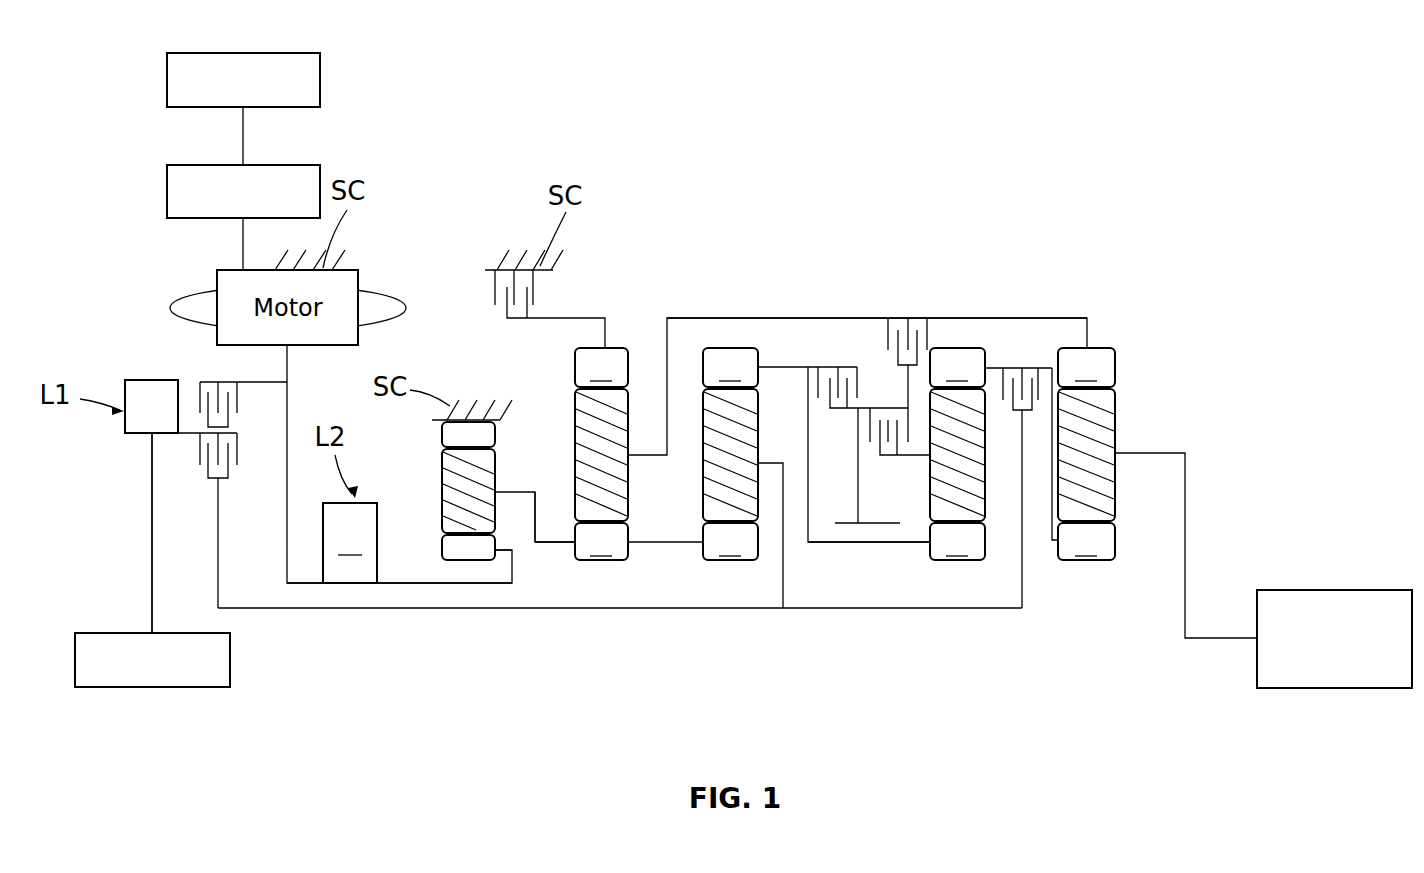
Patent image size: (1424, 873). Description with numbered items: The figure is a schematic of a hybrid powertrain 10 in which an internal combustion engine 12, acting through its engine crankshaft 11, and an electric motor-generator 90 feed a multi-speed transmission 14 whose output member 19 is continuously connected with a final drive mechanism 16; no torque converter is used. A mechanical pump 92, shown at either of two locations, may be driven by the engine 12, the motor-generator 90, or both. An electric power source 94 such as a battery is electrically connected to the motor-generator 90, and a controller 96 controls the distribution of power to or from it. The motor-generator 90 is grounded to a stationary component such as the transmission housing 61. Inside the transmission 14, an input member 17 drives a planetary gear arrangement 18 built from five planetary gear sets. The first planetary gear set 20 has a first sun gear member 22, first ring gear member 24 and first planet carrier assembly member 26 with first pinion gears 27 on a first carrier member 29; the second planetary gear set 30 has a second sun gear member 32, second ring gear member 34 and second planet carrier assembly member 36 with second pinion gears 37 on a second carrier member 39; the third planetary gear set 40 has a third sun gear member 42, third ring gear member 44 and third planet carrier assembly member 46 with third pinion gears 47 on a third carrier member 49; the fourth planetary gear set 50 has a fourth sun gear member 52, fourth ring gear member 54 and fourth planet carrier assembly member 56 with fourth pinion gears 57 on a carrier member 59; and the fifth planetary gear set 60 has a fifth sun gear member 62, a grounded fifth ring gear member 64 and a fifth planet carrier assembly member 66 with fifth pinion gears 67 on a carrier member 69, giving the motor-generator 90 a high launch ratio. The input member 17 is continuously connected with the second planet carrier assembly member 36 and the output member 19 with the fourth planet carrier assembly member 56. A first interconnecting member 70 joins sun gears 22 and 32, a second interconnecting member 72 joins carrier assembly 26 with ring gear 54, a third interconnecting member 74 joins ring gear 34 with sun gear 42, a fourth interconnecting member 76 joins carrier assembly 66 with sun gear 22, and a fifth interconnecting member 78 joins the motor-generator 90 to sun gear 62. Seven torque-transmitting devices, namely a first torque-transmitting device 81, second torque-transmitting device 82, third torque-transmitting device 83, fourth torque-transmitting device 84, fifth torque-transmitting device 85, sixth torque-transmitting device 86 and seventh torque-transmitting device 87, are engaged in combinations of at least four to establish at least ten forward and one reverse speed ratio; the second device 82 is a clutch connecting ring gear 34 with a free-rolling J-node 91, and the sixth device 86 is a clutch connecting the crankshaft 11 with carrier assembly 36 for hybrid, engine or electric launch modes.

The hybrid powertrain 10 is at (435, 42).
The engine crankshaft 11 is at (150, 570).
The internal combustion engine 12 is at (132, 688).
The multi-speed transmission 14 is at (1153, 146).
The final drive mechanism 16 is at (1358, 590).
The input member 17 is at (283, 612).
The planetary gear arrangement 18 is at (981, 264).
The output member 19 is at (1188, 540).
The first planetary gear set 20 is at (602, 574).
The first sun gear member 22 is at (601, 541).
The first ring gear member 24 is at (601, 367).
The first planet carrier assembly member 26 is at (642, 432).
The first pinion gears 27 is at (575, 457).
The first carrier member 29 is at (660, 455).
The second planetary gear set 30 is at (731, 574).
The second sun gear member 32 is at (730, 541).
The second ring gear member 34 is at (730, 367).
The second planet carrier assembly member 36 is at (774, 440).
The second pinion gears 37 is at (688, 540).
The second carrier member 39 is at (774, 462).
The third planetary gear set 40 is at (951, 574).
The third sun gear member 42 is at (957, 541).
The third ring gear member 44 is at (957, 367).
The third planet carrier assembly member 46 is at (919, 476).
The third pinion gears 47 is at (986, 452).
The third carrier member 49 is at (913, 460).
The fourth planetary gear set 50 is at (1096, 574).
The fourth sun gear member 52 is at (1086, 541).
The fourth ring gear member 54 is at (1086, 367).
The fourth planet carrier assembly member 56 is at (1054, 554).
The fourth pinion gears 57 is at (1117, 412).
The carrier member 59 is at (1049, 535).
The fifth planetary gear set 60 is at (468, 565).
The transmission housing 61 is at (345, 250).
The fifth sun gear member 62 is at (446, 572).
The fifth ring gear member 64 is at (438, 437).
The fifth planet carrier assembly member 66 is at (513, 512).
The fifth pinion gears 67 is at (442, 490).
The carrier member 69 is at (513, 490).
The first interconnecting member 70 is at (660, 548).
The second interconnecting member 72 is at (760, 318).
The third interconnecting member 74 is at (813, 545).
The fourth interconnecting member 76 is at (558, 548).
The fifth interconnecting member 78 is at (415, 587).
The first torque-transmitting device 81 is at (493, 286).
The second torque-transmitting device 82 is at (893, 404).
The third torque-transmitting device 83 is at (857, 377).
The fourth torque-transmitting device 84 is at (1047, 375).
The fifth torque-transmitting device 85 is at (927, 318).
The sixth torque-transmitting device 86 is at (200, 450).
The seventh torque-transmitting device 87 is at (200, 392).
The electric motor-generator 90 is at (307, 347).
The J-node 91 is at (880, 525).
The mechanical pump 92 is at (165, 380).
The electric power source 94 is at (225, 53).
The controller 96 is at (225, 165).